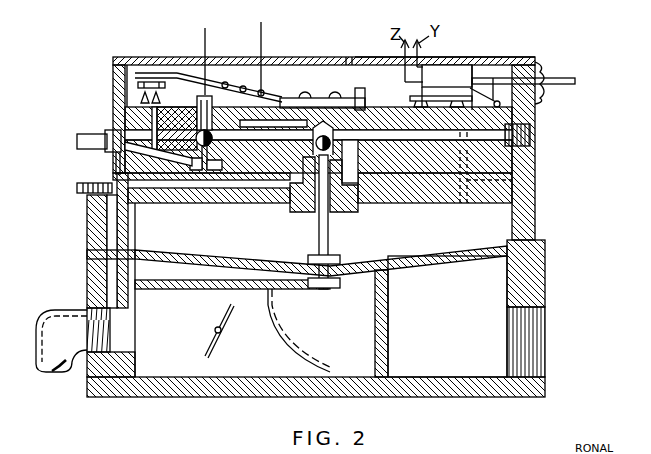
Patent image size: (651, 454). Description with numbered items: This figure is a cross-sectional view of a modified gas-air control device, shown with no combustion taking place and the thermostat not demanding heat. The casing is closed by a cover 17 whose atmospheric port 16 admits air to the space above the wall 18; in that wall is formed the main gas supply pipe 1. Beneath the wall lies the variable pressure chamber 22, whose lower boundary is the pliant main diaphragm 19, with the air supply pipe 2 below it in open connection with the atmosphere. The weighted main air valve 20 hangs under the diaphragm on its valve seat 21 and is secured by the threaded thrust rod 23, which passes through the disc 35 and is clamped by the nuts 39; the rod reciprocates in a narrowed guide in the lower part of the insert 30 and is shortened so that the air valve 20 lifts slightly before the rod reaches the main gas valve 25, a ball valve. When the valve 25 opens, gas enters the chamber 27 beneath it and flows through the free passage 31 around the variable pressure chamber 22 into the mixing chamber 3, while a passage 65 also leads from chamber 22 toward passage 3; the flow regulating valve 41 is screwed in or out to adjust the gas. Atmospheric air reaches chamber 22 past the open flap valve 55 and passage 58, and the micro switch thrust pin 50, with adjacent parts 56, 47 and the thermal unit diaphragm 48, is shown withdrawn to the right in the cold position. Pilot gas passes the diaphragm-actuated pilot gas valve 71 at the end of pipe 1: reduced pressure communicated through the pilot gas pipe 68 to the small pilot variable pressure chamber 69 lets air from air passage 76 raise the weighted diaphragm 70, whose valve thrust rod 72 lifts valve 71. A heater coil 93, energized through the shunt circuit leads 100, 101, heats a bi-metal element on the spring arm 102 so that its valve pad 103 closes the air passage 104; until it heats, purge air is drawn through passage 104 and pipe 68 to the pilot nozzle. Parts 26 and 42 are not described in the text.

The main gas supply pipe 1 is at (512, 138).
The air supply pipe 2 is at (465, 329).
The mixing chamber 3 is at (52, 340).
The atmospheric port 16 is at (352, 57).
The cover 17 is at (318, 57).
The wall 18 is at (92, 208).
The main diaphragm 19 is at (455, 256).
The main air valve 20 is at (386, 278).
The valve seat 21 is at (372, 303).
The variable pressure chamber 22 is at (492, 238).
The thrust rod 23 is at (330, 240).
The main gas valve 25 is at (335, 141).
The plate edge 26 is at (90, 262).
The chamber 27 is at (326, 162).
The insert 30 is at (352, 207).
The passage 31 is at (283, 202).
The disc 35 is at (262, 259).
The nuts 39 is at (306, 259).
The flow regulating valve 41 is at (77, 188).
The needle 42 is at (212, 348).
The rod 47 is at (560, 78).
The diaphragm of the thermal unit 48 is at (540, 72).
The micro switch thrust pin 50 is at (498, 65).
The flap valve 55 is at (455, 93).
The lever 56 is at (448, 80).
The passage 58 is at (515, 184).
The passage 65 is at (136, 310).
The pilot gas pipe 68 is at (150, 132).
The pilot variable pressure chamber 69 is at (185, 170).
The weighted diaphragm 70 is at (205, 172).
The pilot gas valve 71 is at (201, 112).
The valve thrust rod 72 is at (213, 172).
The air passage 76 is at (115, 160).
The heater coil 93 is at (262, 93).
The shunt circuit lead 100 is at (205, 30).
The shunt circuit lead 101 is at (261, 50).
The spring arm 102 is at (324, 51).
The valve pad 103 is at (135, 75).
The passage 104 is at (135, 112).